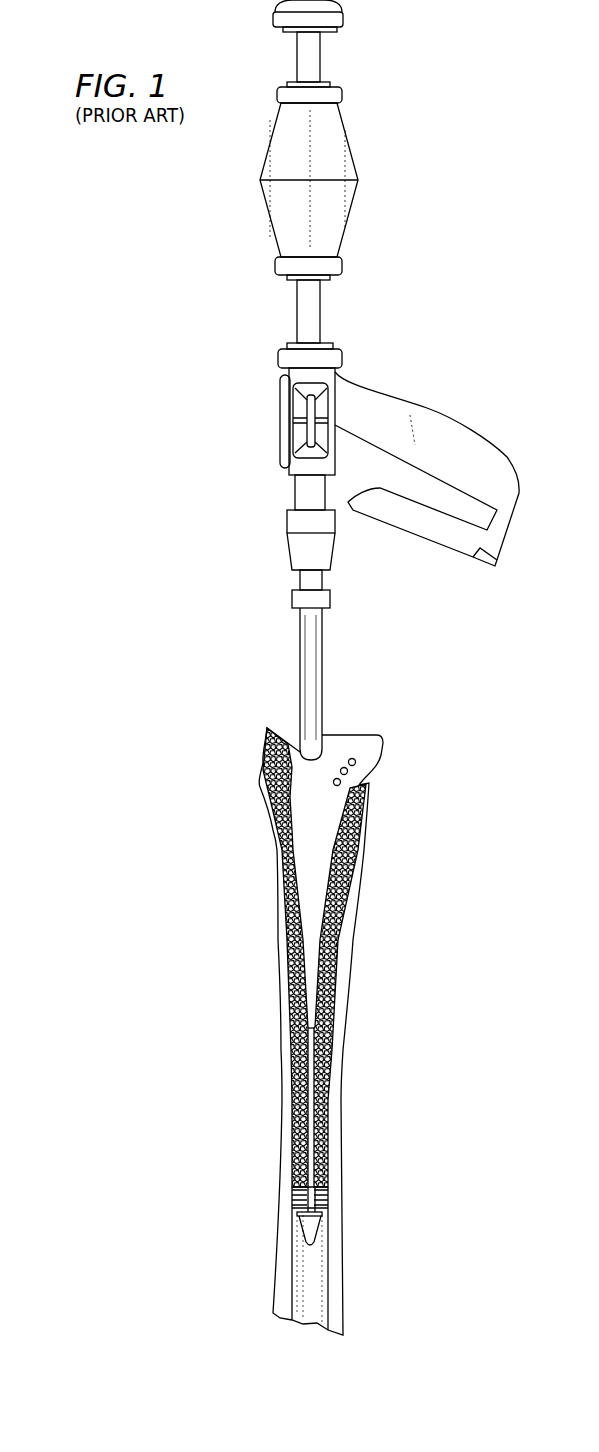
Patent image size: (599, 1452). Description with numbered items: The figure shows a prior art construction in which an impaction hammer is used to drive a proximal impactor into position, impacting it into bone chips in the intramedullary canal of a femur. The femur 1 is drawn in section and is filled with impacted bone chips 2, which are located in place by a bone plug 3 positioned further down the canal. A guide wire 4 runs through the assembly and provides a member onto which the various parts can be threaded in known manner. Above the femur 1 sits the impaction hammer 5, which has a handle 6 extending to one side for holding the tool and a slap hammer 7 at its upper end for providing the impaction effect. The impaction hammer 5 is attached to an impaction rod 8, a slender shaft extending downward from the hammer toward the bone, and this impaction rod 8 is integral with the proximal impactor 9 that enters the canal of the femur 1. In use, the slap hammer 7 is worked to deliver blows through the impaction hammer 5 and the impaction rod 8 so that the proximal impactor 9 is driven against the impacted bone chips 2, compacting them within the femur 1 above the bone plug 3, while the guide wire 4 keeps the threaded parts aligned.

The femur 1 is at (337, 1023).
The impacted bone chips 2 is at (320, 1075).
The bone plug 3 is at (322, 1225).
The guide wire 4 is at (312, 1142).
The impaction hammer 5 is at (337, 388).
The handle 6 is at (447, 450).
The slap hammer 7 is at (323, 205).
The impaction rod 8 is at (312, 658).
The proximal impactor 9 is at (313, 845).